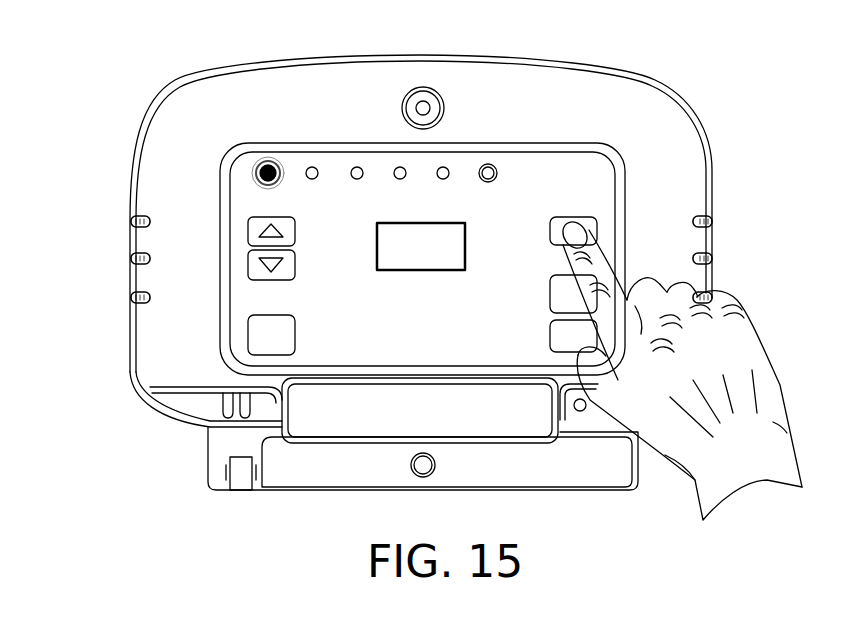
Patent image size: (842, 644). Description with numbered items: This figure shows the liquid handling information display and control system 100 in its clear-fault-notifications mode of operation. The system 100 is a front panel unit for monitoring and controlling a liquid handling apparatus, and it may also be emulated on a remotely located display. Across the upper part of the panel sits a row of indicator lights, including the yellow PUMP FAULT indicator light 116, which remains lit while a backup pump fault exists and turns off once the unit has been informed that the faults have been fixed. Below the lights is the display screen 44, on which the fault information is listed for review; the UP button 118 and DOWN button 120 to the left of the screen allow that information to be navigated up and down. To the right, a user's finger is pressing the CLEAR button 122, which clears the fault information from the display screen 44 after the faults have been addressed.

The liquid handling information display and control system 100 is at (627, 60).
The PUMP FAULT indicator light 116 is at (489, 165).
The UP button 118 is at (247, 228).
The DOWN button 120 is at (247, 260).
The CLEAR button 122 is at (598, 227).
The display screen 44 is at (420, 273).